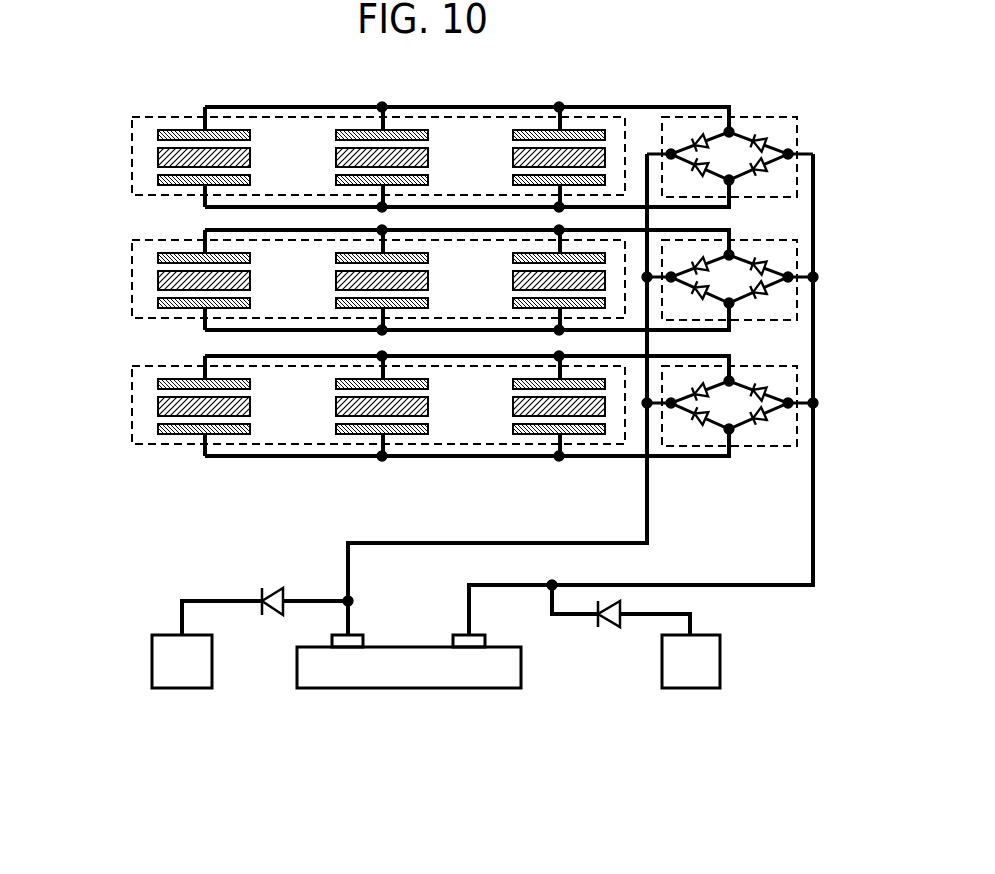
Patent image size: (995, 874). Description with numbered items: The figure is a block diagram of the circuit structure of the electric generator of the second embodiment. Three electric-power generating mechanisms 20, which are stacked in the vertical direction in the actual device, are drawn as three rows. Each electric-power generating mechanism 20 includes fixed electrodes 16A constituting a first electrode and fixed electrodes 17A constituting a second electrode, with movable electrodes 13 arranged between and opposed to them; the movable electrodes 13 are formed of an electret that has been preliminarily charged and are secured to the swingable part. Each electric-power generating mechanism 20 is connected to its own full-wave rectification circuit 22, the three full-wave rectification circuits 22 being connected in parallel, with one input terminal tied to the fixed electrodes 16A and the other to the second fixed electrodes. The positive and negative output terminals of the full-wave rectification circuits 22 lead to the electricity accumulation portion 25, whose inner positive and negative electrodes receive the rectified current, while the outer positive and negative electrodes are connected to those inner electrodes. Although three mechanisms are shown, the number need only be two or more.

The movable electrodes 13 is at (167, 157).
The fixed electrodes 16A is at (175, 135).
The fixed electrodes 17A is at (163, 180).
The electric-power generating mechanism 20 is at (384, 263).
The full-wave rectification circuit 22 is at (830, 371).
The electricity accumulation portion 25 is at (498, 688).